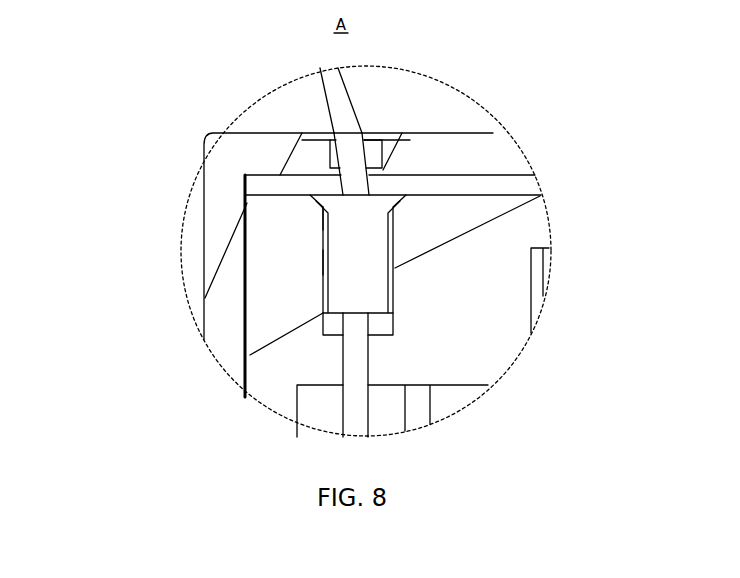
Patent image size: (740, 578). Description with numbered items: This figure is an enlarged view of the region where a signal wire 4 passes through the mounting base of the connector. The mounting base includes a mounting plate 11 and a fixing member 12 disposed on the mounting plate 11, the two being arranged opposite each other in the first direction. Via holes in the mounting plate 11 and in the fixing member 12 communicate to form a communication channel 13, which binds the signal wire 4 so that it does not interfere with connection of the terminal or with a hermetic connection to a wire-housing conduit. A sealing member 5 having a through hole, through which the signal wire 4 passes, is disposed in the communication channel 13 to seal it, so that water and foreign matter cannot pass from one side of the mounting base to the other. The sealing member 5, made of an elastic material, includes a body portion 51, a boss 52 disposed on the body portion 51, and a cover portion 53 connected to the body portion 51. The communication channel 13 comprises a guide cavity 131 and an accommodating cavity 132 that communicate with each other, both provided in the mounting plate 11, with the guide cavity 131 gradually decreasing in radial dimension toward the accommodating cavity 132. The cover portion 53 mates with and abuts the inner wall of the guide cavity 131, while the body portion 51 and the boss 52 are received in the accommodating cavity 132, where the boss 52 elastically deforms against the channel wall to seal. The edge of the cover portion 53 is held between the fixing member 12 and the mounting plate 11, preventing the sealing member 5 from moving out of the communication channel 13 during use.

The signal wire 4 is at (347, 122).
The sealing member 5 is at (598, 177).
The mounting plate 11 is at (267, 318).
The fixing member 12 is at (283, 148).
The communication channel 13 is at (105, 195).
The guide cavity 131 is at (312, 213).
The accommodating cavity 132 is at (312, 264).
The body portion 51 is at (451, 265).
The boss 52 is at (370, 383).
The cover portion 53 is at (385, 200).